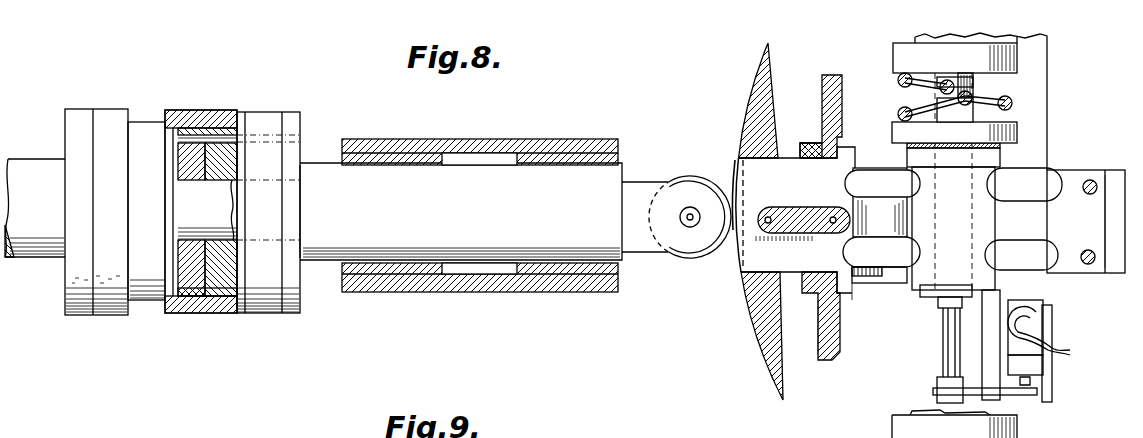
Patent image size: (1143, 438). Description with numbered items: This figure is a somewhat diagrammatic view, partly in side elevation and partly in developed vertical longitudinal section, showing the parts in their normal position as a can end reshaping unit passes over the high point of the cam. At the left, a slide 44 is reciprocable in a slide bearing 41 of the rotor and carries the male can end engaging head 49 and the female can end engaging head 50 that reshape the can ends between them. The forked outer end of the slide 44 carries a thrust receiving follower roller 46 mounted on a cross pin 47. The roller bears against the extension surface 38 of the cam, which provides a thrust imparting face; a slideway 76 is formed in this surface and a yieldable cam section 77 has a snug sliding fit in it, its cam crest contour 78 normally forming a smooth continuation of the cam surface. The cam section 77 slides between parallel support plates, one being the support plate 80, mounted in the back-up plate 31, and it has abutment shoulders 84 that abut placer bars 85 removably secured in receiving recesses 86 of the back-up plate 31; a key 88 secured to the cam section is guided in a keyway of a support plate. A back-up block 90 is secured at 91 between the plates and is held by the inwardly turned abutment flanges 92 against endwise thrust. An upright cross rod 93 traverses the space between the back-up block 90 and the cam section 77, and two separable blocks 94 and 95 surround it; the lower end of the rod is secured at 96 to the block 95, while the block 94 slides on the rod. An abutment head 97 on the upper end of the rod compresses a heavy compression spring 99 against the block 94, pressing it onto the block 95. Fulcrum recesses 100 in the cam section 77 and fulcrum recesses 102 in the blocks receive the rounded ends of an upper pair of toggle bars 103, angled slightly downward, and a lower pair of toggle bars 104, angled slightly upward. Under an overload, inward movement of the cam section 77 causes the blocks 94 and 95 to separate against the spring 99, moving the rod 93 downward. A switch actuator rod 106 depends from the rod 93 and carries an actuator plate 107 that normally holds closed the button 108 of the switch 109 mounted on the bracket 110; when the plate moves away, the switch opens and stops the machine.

The back-up plate 31 is at (830, 328).
The extension surface 38 is at (763, 337).
The slide bearing 41 is at (418, 143).
The slide 44 is at (480, 175).
The thrust receiving follower roller 46 is at (690, 258).
The cross pin 47 is at (683, 222).
The male can end engaging head 49 is at (120, 95).
The female can end engaging head 50 is at (280, 94).
The slideway 76 is at (772, 273).
The cam section 77 is at (752, 256).
The cam crest contour 78 is at (745, 210).
The support plate 80 is at (1013, 212).
The abutment shoulder 84 is at (852, 294).
The placer bar 85 is at (815, 135).
The receiving recess 86 is at (828, 128).
The key 88 is at (800, 195).
The back-up block 90 is at (1077, 182).
The securing means 91 is at (1083, 250).
The abutment flange 92 is at (1115, 262).
The cross rod 93 is at (982, 98).
The block 94 is at (915, 285).
The block 95 is at (955, 267).
The securing point 96 is at (968, 297).
The abutment head 97 is at (893, 52).
The compression spring 99 is at (900, 108).
The fulcrum recess 100 is at (843, 255).
The fulcrum recess 102 is at (985, 183).
The toggle bar 103 is at (880, 178).
The toggle bar 104 is at (890, 262).
The switch actuator rod 106 is at (945, 350).
The actuator plate 107 is at (933, 388).
The button 108 is at (1030, 405).
The switch 109 is at (1050, 362).
The bracket 110 is at (1048, 395).